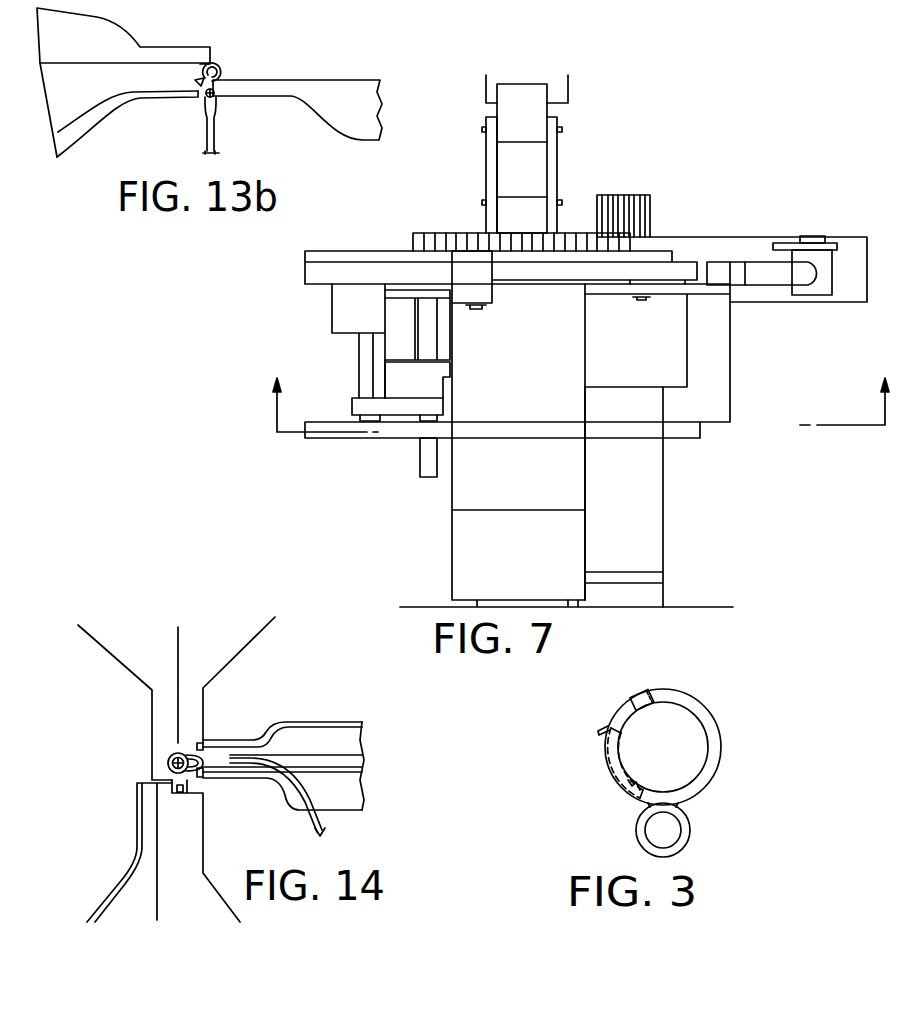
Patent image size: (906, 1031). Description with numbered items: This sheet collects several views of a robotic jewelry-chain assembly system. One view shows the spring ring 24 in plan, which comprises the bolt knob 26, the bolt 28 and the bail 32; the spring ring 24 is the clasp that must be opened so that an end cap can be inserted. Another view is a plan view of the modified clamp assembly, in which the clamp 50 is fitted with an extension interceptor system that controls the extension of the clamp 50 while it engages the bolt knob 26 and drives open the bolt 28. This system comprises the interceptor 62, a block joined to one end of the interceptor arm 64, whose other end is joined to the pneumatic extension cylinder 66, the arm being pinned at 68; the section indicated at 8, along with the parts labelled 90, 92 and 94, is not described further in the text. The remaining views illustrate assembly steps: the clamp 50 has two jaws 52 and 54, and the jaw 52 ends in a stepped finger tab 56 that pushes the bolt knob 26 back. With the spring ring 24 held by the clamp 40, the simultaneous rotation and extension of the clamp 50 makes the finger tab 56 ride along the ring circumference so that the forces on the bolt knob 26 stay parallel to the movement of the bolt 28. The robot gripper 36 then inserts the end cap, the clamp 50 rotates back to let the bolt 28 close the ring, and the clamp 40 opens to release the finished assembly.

In FIG. 7, the section line 8- 8 is at (581, 404).
In FIG. 3, the spring ring 24 is at (723, 712).
In FIG. 13b, the bolt knob 26 is at (197, 85).
In FIG. 14, the bolt knob 26 is at (185, 763).
In FIG. 3, the bolt knob 26 is at (603, 737).
In FIG. 3, the bolt 28 is at (625, 703).
In FIG. 3, the bail 32 is at (693, 835).
In FIG. 14, the gripper 36 is at (317, 722).
In FIG. 13b, the clamp 40 is at (270, 126).
In FIG. 13b, the clamp 50 is at (167, 126).
In FIG. 7, the clamp 50 is at (568, 92).
In FIG. 14, the clamp 50 is at (167, 661).
In FIG. 13b, the jaw 52 is at (93, 95).
In FIG. 13b, the jaw 54 is at (90, 53).
In FIG. 13b, the finger tab 56 is at (218, 65).
In FIG. 7, the interceptor 62 is at (393, 338).
In FIG. 7, the interceptor arm 64 is at (600, 298).
In FIG. 7, the pneumatic extension cylinder 66 is at (752, 270).
In FIG. 7, the pin 68 is at (643, 300).
In FIG. 7, the locating pin 90 is at (425, 462).
In FIG. 7, the slide block 92 is at (432, 400).
In FIG. 7, the motor housing 94 is at (547, 375).